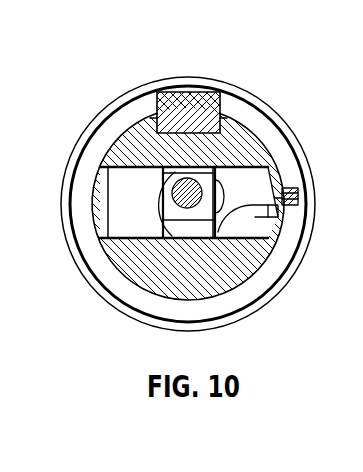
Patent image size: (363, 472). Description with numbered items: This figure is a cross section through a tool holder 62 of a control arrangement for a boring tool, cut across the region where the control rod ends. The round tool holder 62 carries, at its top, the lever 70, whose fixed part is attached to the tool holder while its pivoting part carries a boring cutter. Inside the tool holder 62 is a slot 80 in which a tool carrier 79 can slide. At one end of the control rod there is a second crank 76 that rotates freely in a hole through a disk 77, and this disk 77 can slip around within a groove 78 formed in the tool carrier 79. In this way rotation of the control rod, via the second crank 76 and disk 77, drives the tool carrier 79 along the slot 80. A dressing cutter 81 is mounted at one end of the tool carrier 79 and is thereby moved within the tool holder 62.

The tool holder 62 is at (253, 281).
The lever 70 is at (196, 86).
The second crank 76 is at (168, 184).
The disk 77 is at (174, 213).
The groove 78 is at (187, 228).
The tool carrier 79 is at (110, 193).
The slot 80 is at (122, 150).
The dressing cutter 81 is at (300, 197).